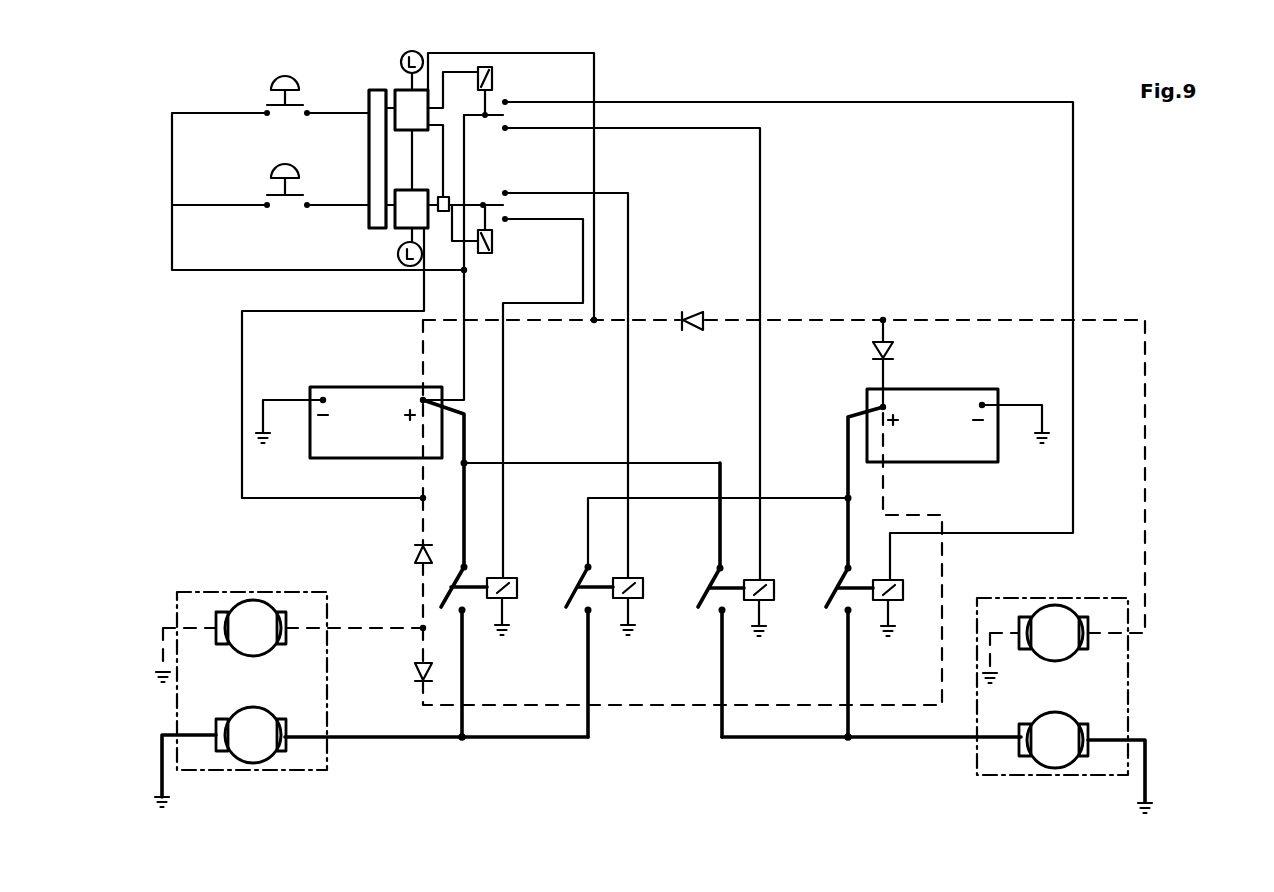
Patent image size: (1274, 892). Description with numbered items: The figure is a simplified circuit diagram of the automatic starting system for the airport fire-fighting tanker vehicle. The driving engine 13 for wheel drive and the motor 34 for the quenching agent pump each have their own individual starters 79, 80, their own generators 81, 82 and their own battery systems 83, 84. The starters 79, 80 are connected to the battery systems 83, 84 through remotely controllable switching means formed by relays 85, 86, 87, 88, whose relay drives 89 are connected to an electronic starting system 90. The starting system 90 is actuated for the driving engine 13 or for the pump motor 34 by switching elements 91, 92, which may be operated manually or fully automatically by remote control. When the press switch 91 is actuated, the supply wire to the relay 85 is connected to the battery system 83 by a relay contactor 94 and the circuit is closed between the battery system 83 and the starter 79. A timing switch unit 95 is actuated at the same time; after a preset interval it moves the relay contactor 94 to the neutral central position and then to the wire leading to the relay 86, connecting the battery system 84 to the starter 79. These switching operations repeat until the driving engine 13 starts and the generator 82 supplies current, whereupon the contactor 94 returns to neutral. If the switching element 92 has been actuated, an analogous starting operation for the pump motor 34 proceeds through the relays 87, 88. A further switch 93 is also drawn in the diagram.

The driving engine 13 is at (1108, 685).
The motor for the quenching agent pump 34 is at (308, 695).
The starter 79 is at (1050, 752).
The starter 80 is at (252, 750).
The generator 81 is at (1053, 625).
The generator 82 is at (246, 620).
The battery system 83 is at (945, 407).
The battery system 84 is at (350, 405).
The relay 85 is at (902, 601).
The relay 86 is at (768, 600).
The relay 87 is at (642, 599).
The relay 88 is at (514, 599).
The relay drive 89 is at (518, 586).
The electronic starting system 90 is at (387, 236).
The switching element 91 is at (289, 78).
The switching element 92 is at (289, 172).
The switch 93 is at (493, 78).
The relay contactor 94 is at (493, 117).
The timing switch unit 95 is at (401, 64).